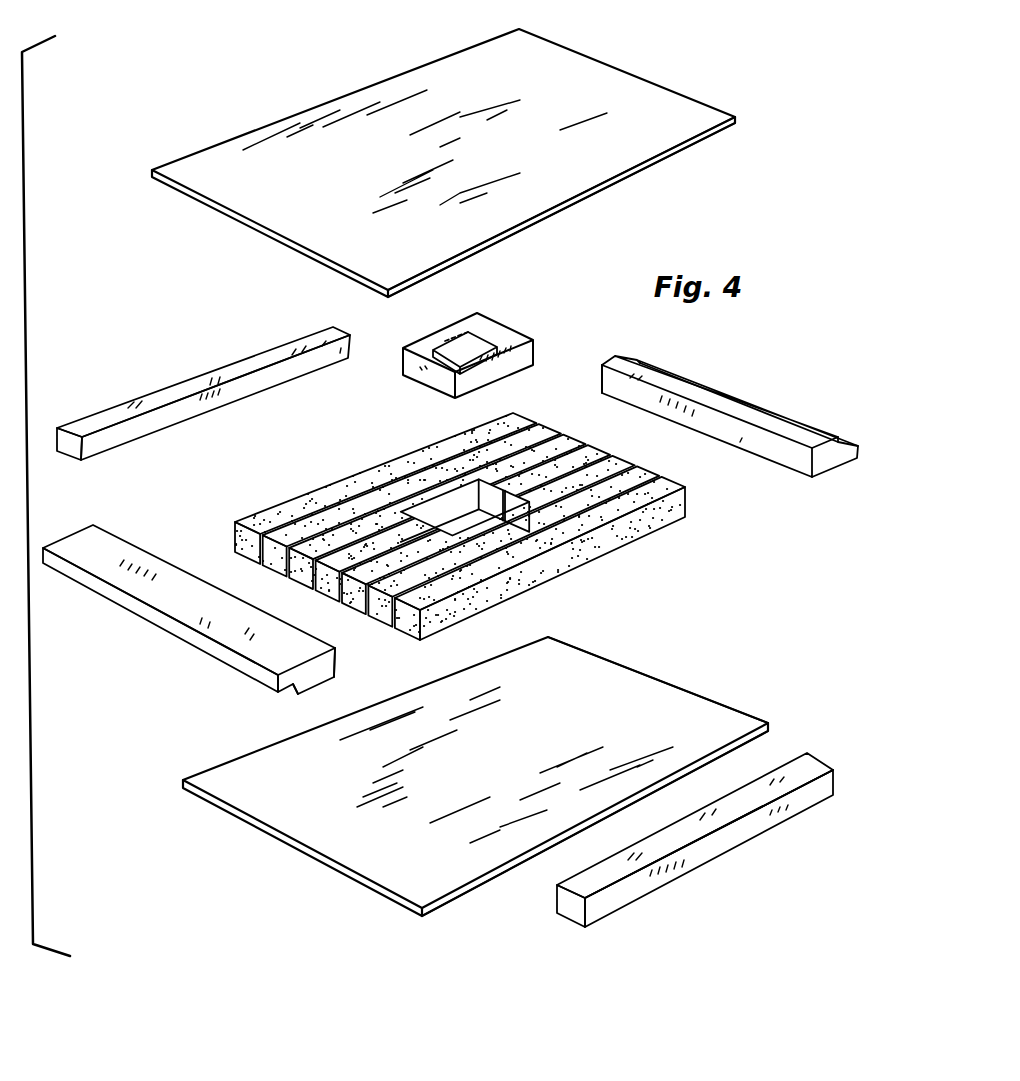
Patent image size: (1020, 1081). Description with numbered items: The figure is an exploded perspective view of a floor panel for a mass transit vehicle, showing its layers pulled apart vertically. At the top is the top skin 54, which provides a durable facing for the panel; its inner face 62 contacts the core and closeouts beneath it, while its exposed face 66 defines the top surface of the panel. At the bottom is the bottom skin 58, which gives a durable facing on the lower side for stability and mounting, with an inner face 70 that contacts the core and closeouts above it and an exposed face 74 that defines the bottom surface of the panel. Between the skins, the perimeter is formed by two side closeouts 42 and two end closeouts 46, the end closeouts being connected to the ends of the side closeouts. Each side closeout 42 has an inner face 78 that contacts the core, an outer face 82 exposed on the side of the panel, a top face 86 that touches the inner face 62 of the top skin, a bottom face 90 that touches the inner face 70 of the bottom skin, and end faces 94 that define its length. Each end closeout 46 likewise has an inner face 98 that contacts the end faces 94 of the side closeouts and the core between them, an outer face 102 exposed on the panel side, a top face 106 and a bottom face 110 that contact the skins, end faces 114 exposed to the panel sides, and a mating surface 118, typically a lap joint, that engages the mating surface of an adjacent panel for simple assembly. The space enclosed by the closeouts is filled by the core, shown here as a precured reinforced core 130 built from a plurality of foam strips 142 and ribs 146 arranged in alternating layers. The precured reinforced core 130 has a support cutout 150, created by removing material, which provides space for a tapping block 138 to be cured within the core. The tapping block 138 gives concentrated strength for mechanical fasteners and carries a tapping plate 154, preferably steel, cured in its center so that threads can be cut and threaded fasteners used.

The side closeout 42 is at (451, 619).
The end closeout 46 is at (450, 526).
The top skin 54 is at (745, 108).
The bottom skin 58 is at (288, 845).
The inner face 62 is at (657, 153).
The exposed face 66 is at (607, 153).
The inner face 70 is at (628, 680).
The exposed face 74 is at (762, 733).
The inner face 78 is at (246, 390).
The outer face 82 is at (783, 820).
The top face 86 is at (298, 342).
The bottom face 90 is at (207, 410).
The end face 94 is at (72, 447).
The inner face 98 is at (793, 460).
The outer face 102 is at (203, 645).
The top face 106 is at (793, 428).
The bottom face 110 is at (601, 394).
The end face 114 is at (828, 457).
The mating surface 118 is at (700, 382).
The precured reinforced core 130 is at (493, 524).
The tapping block 138 is at (483, 306).
The foam strip 142 is at (670, 479).
The rib 146 is at (592, 461).
The support cutout 150 is at (460, 518).
The tapping plate 154 is at (500, 328).